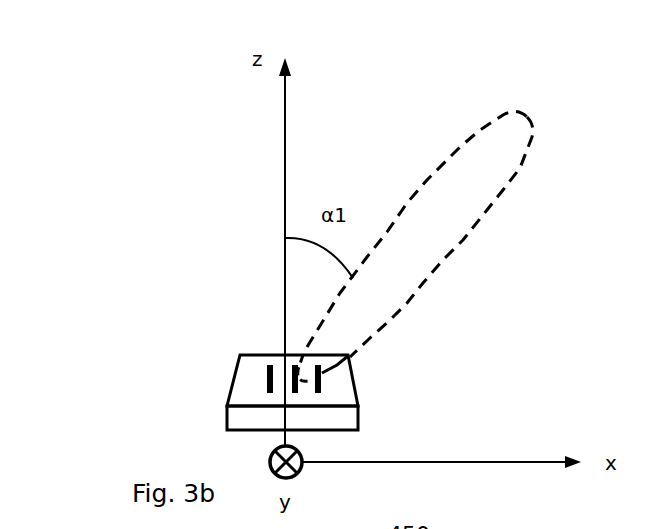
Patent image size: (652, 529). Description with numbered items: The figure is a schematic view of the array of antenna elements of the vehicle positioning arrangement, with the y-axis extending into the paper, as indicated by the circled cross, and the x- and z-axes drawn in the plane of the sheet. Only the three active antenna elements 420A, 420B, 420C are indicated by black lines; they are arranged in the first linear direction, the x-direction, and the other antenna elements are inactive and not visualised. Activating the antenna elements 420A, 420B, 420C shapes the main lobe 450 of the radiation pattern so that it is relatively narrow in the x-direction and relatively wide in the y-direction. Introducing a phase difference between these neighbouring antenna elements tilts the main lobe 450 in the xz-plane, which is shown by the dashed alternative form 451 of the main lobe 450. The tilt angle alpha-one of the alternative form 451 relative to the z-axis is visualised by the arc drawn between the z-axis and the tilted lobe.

The antenna element 420A is at (216, 369).
The antenna element 420B is at (166, 343).
The antenna element 420C is at (184, 359).
The main lobe 450 is at (452, 180).
The alternative form of the main lobe 451 is at (500, 175).